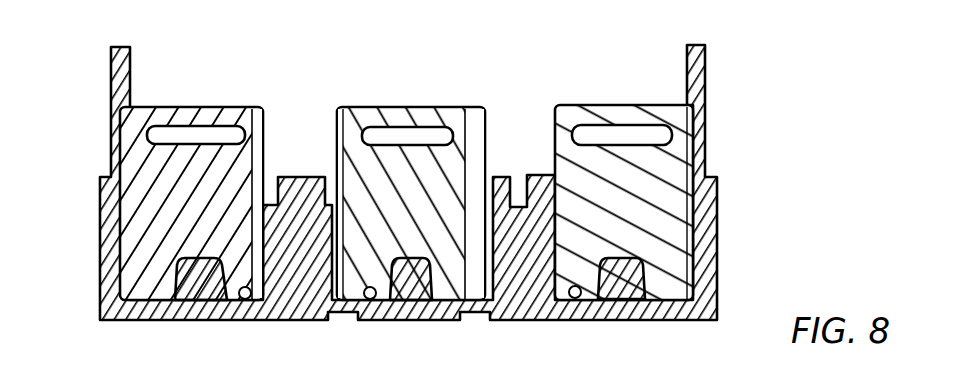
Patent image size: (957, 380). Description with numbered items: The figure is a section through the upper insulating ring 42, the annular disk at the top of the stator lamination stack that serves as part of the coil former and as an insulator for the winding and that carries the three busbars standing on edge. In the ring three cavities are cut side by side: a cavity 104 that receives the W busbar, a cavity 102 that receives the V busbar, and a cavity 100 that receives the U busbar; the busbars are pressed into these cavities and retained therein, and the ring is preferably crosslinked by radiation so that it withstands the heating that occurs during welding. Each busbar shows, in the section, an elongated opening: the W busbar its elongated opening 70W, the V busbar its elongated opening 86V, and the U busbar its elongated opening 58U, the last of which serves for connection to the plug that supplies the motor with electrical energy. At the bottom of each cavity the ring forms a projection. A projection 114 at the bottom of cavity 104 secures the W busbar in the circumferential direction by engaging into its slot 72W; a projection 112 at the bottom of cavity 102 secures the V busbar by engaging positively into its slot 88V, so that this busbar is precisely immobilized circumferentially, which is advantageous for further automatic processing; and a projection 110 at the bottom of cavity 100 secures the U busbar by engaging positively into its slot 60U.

The insulating ring 42 is at (100, 262).
The elongated opening 70W is at (160, 133).
The slot 72W is at (233, 110).
The elongated opening 86V is at (367, 137).
The slot 88V is at (470, 111).
The elongated opening 58U is at (667, 132).
The slot 60U is at (640, 272).
The projection 114 is at (201, 300).
The projection 112 is at (433, 300).
The projection 110 is at (640, 300).
The cavity 104 is at (245, 301).
The cavity 102 is at (368, 300).
The cavity 100 is at (576, 300).